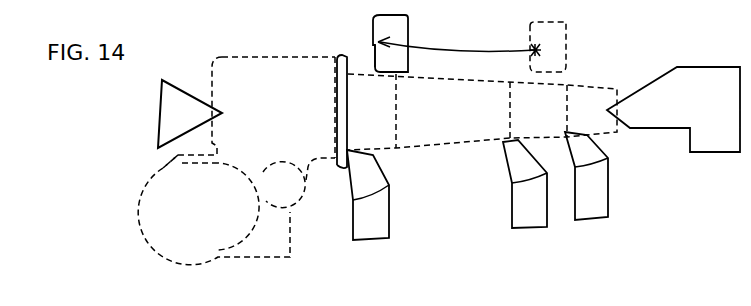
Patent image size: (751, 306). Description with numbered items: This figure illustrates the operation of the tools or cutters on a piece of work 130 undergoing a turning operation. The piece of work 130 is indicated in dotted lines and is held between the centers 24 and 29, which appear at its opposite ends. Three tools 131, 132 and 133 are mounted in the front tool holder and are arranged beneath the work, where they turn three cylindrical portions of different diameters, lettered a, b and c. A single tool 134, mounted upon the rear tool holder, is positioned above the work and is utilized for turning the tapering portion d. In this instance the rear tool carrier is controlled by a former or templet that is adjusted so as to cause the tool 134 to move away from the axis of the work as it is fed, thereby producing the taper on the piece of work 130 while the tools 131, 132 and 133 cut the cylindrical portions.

The center 24 is at (673, 109).
The center 29 is at (172, 107).
The piece of work 130 is at (304, 68).
The tool 131 is at (378, 218).
The tool 132 is at (512, 205).
The tool 133 is at (588, 214).
The single tool 134 is at (400, 31).